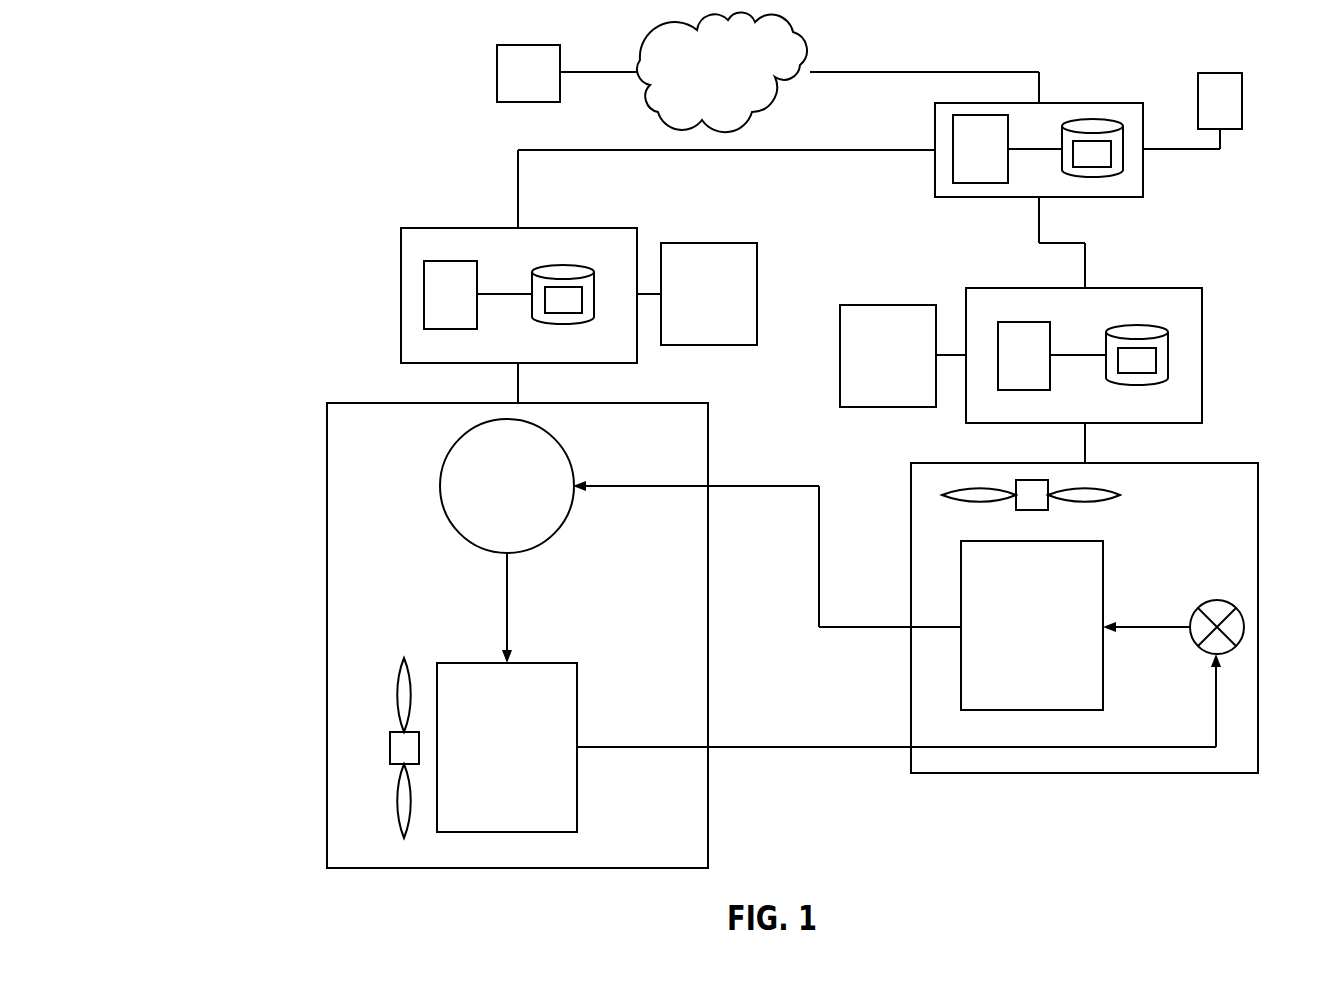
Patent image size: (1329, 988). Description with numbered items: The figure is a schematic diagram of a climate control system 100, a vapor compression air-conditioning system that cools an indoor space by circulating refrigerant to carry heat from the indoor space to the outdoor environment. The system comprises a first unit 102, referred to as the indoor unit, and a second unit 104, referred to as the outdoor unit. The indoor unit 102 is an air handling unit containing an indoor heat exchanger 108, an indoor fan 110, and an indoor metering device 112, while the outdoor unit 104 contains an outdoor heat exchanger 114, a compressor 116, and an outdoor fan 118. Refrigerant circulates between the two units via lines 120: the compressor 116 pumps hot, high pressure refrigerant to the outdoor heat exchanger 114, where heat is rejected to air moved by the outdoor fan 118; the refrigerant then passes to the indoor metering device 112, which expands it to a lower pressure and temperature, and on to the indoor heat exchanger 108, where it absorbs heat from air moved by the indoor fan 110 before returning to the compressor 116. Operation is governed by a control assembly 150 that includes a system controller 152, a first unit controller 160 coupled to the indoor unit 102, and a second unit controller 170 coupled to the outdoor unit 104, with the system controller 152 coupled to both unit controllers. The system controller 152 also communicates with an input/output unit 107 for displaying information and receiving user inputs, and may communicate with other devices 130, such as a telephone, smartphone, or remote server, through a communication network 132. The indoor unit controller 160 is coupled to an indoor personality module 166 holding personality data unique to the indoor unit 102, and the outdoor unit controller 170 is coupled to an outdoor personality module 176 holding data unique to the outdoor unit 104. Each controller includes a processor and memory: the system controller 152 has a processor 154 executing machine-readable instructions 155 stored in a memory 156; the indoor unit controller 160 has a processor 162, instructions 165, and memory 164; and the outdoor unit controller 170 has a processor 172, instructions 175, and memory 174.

The climate control system 100 is at (276, 351).
The first unit 102 is at (1252, 462).
The second unit 104 is at (327, 435).
The input/output unit 107 is at (1242, 101).
The indoor heat exchanger 108 is at (1103, 578).
The indoor fan 110 is at (1120, 495).
The indoor metering device 112 is at (1214, 600).
The outdoor heat exchanger 114 is at (556, 663).
The compressor 116 is at (447, 515).
The outdoor fan 118 is at (404, 658).
The lines 120 is at (763, 485).
The other device 130 is at (497, 70).
The communication network 132 is at (746, 84).
The control assembly 150 is at (352, 138).
The system controller 152 is at (925, 187).
The processor 154 is at (985, 183).
The machine-readable instructions 155 is at (1093, 167).
The memory 156 is at (1090, 119).
The first unit controller 160 is at (1190, 273).
The processor 162 is at (1013, 322).
The memory 164 is at (1160, 325).
The machine-readable instructions 165 is at (1156, 358).
The indoor personality module 166 is at (878, 305).
The second unit controller 170 is at (390, 251).
The processor 172 is at (444, 261).
The memory 174 is at (558, 265).
The machine-readable instructions 175 is at (580, 287).
The outdoor personality module 176 is at (715, 243).